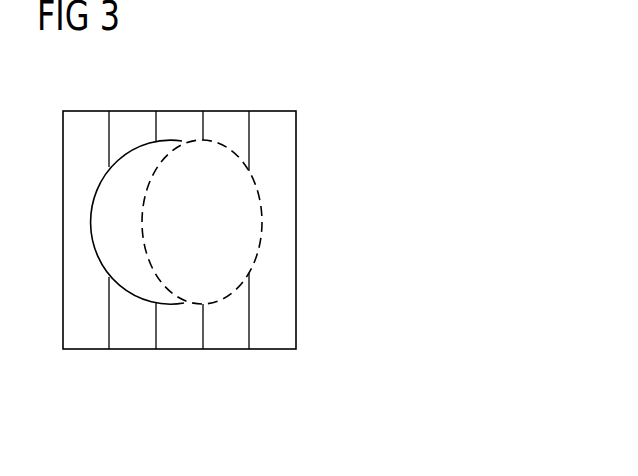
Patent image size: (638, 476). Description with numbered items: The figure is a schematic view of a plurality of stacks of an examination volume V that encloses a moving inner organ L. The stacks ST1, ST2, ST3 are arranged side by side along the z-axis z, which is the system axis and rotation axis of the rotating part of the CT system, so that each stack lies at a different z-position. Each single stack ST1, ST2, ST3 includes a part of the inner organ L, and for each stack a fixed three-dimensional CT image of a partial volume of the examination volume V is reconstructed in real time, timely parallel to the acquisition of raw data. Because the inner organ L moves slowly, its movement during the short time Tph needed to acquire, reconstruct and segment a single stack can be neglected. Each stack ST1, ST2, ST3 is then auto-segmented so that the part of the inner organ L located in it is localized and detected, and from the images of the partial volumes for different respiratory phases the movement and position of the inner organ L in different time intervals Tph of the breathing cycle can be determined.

The first stack ST1 is at (110, 103).
The second stack ST2 is at (156, 103).
The third stack ST3 is at (203, 103).
The inner organ L is at (100, 222).
The time interval Tph is at (109, 355).
The examination volume V is at (437, 105).
The z-axis z is at (410, 304).